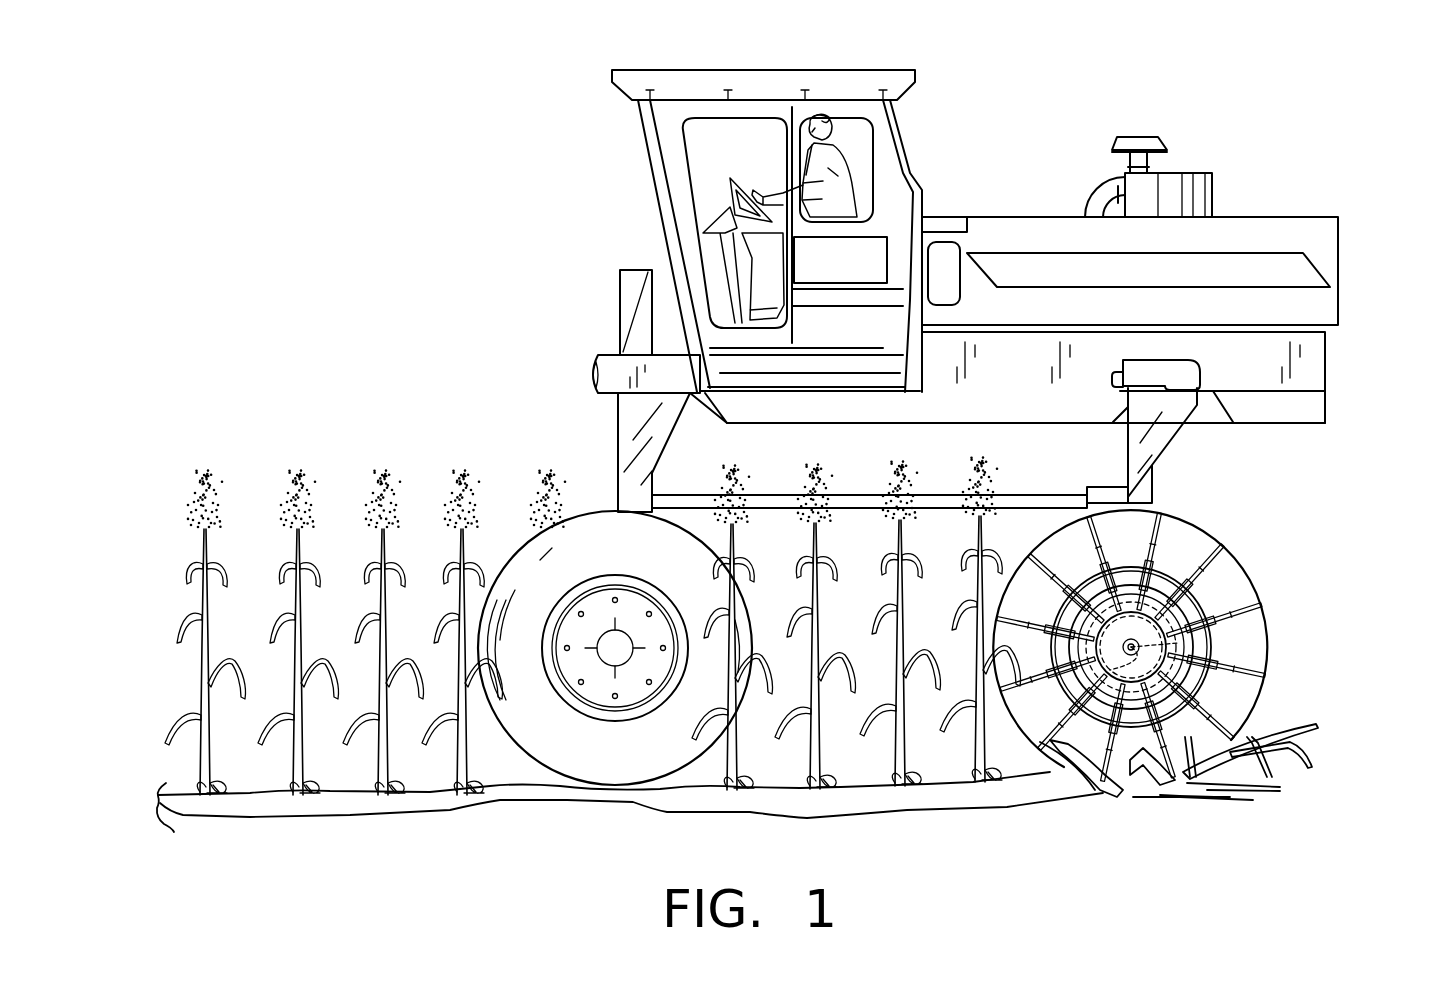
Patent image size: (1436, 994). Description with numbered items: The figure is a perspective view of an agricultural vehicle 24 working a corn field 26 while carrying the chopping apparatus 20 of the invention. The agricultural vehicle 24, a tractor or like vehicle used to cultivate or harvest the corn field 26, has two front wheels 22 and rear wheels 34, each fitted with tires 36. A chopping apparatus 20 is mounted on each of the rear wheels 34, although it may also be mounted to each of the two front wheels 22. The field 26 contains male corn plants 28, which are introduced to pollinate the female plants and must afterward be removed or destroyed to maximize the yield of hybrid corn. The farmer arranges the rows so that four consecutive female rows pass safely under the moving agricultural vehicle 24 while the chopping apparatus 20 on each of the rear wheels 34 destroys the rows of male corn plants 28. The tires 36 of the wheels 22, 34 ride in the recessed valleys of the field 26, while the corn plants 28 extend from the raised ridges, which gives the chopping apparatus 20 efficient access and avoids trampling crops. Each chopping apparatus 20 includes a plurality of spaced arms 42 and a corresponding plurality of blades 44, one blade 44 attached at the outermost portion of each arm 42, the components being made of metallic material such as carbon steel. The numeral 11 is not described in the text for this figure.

The crop residue on ground 11 is at (1102, 803).
The chopping apparatus 20 is at (1184, 621).
The front wheels 22 is at (565, 603).
The agricultural vehicle 24 is at (1331, 158).
The corn field 26 is at (336, 452).
The male corn plants 28 is at (299, 466).
The rear wheels 34 is at (1175, 557).
The tires 36 is at (526, 651).
The spaced arms 42 is at (1253, 637).
The blades 44 is at (1253, 677).